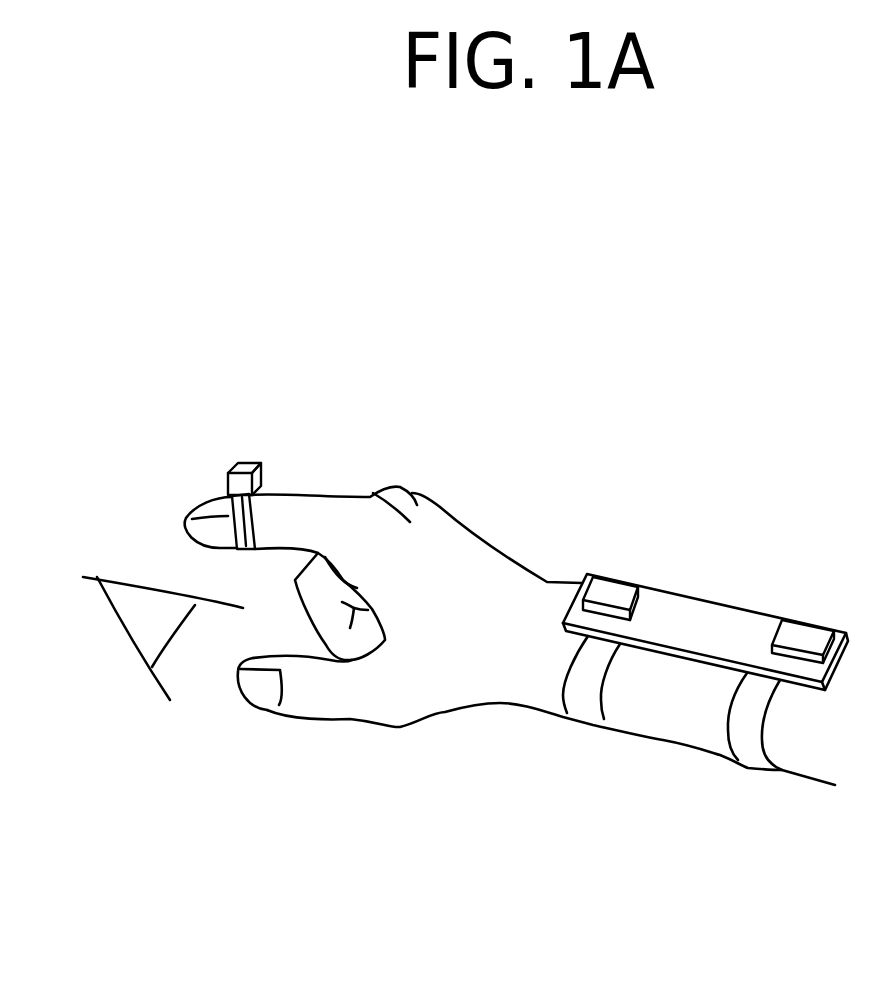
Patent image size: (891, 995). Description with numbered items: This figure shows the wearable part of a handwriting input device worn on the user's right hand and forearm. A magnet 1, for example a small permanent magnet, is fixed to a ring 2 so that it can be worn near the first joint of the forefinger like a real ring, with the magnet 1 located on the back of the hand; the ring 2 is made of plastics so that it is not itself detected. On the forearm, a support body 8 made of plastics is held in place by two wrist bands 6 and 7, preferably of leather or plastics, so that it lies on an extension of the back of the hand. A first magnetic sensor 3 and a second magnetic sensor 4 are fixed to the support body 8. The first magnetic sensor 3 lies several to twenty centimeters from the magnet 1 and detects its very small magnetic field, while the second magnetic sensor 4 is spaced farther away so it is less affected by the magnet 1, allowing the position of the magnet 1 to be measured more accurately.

The magnet 1 is at (237, 463).
The ring 2 is at (245, 525).
The first magnetic sensor 3 is at (612, 585).
The second magnetic sensor 4 is at (807, 627).
The wrist band 6 is at (587, 698).
The wrist band 7 is at (747, 745).
The support body 8 is at (712, 603).